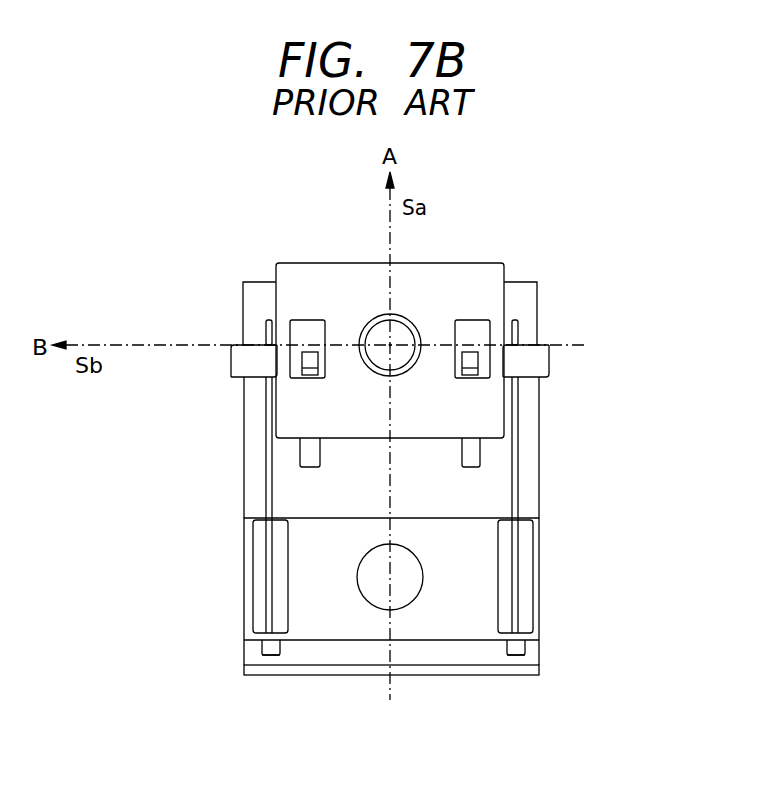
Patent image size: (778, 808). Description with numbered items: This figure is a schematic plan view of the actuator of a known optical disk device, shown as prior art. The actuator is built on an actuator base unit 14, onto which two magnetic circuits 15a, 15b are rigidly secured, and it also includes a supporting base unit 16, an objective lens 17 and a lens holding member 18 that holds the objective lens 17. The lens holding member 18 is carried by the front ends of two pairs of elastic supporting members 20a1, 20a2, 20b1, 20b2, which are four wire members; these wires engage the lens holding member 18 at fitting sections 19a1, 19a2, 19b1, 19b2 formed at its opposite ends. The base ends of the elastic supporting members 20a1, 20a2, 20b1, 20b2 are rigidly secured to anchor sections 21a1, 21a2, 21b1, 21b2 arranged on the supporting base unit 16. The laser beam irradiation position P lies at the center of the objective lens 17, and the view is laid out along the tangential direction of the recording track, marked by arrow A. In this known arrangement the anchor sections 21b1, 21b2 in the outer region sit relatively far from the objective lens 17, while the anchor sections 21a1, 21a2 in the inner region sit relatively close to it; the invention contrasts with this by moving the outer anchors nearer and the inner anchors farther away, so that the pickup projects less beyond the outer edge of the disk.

The actuator base unit 14 is at (468, 677).
The magnetic circuit 15a is at (481, 458).
The magnetic circuit 15b is at (300, 456).
The supporting base unit 16 is at (486, 562).
The objective lens 17 is at (402, 318).
The lens holding member 18 is at (484, 270).
The fitting section 19a1 is at (549, 355).
The fitting section 19a2 is at (615, 363).
The fitting section 19b1 is at (231, 362).
The fitting section 19b2 is at (184, 376).
The elastic supporting member 20a1 is at (514, 490).
The elastic supporting member 20a2 is at (606, 505).
The elastic supporting member 20b1 is at (266, 504).
The elastic supporting member 20b2 is at (203, 505).
The anchor section 21a1 is at (526, 645).
The anchor section 21a2 is at (605, 652).
The anchor section 21b1 is at (262, 647).
The anchor section 21b2 is at (210, 654).
The laser beam irradiation position P is at (388, 342).